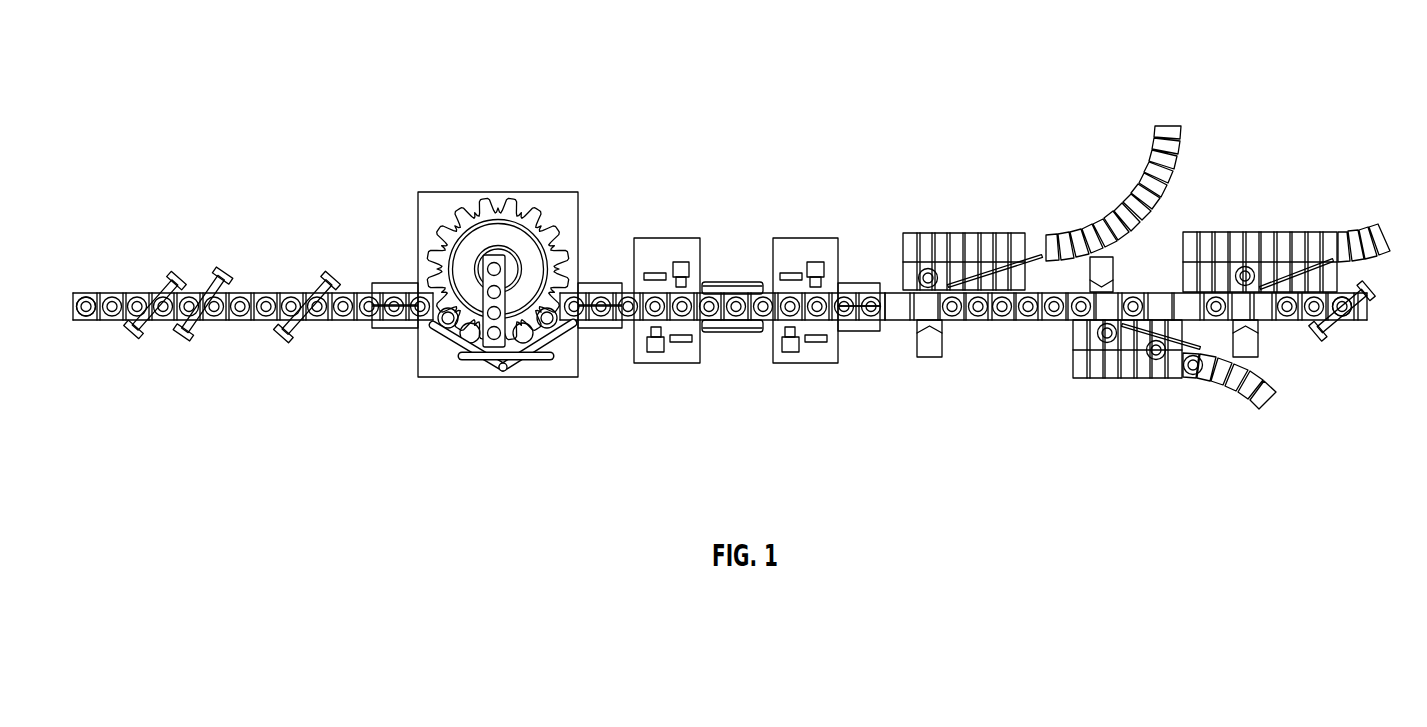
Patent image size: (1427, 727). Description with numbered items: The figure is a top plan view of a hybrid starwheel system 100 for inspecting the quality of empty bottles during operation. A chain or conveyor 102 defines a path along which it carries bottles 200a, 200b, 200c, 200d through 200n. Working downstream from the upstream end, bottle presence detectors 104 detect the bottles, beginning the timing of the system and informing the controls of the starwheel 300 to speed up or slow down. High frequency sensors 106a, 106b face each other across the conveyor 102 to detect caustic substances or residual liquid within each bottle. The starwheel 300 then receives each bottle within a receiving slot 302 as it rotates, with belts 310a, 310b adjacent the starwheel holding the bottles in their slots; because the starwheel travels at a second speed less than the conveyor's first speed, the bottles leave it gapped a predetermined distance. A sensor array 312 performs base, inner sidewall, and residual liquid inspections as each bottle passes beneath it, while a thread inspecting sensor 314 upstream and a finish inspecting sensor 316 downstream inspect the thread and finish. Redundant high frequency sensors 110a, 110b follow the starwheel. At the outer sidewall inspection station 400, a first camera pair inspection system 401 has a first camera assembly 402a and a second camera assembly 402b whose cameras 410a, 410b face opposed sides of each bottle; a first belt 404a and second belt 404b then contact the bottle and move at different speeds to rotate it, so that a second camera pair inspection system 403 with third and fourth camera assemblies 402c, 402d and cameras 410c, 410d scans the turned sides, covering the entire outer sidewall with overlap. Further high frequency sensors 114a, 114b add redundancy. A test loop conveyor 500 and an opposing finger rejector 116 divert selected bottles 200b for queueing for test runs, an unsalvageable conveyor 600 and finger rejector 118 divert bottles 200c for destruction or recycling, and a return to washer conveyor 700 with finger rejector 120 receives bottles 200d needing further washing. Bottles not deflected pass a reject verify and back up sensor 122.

The hybrid starwheel system 100 is at (856, 108).
The conveyor 102 is at (232, 321).
The bottle presence detector 104 is at (178, 280).
The high frequency sensor 106a is at (398, 283).
The high frequency sensor 106b is at (394, 329).
The high frequency sensor 110a is at (592, 283).
The high frequency sensor 110b is at (594, 329).
The high frequency sensor 114a is at (866, 283).
The high frequency sensor 114b is at (862, 331).
The finger rejector 116 is at (943, 343).
The finger rejector 118 is at (1114, 272).
The finger rejector 120 is at (1259, 343).
The sensor 122 is at (1334, 323).
The bottle 200a is at (86, 296).
The bottle 200b is at (931, 270).
The bottle 200c is at (1103, 342).
The bottle 200d is at (1248, 268).
The bottle 200n is at (1346, 288).
The starwheel 300 is at (506, 311).
The receiving slot 302 is at (526, 206).
The belt 310a is at (446, 332).
The belt 310b is at (566, 332).
The sensor array 312 is at (503, 372).
The thread inspecting sensor 314 is at (470, 345).
The finish inspecting sensor 316 is at (528, 348).
The outer sidewall inspection station 400 is at (734, 305).
The first camera pair inspection system 401 is at (671, 358).
The first camera assembly 402a is at (650, 268).
The second camera assembly 402b is at (687, 349).
The third camera assembly 402c is at (773, 352).
The fourth camera assembly 402d is at (803, 266).
The second camera pair inspection system 403 is at (816, 358).
The first belt 404a is at (735, 333).
The second belt 404b is at (744, 282).
The camera 410a is at (655, 352).
The camera 410b is at (681, 262).
The camera 410c is at (790, 352).
The camera 410d is at (816, 262).
The test loop conveyor 500 is at (1041, 257).
The unsalvageable conveyor 600 is at (1207, 377).
The return to washer conveyor 700 is at (1325, 250).